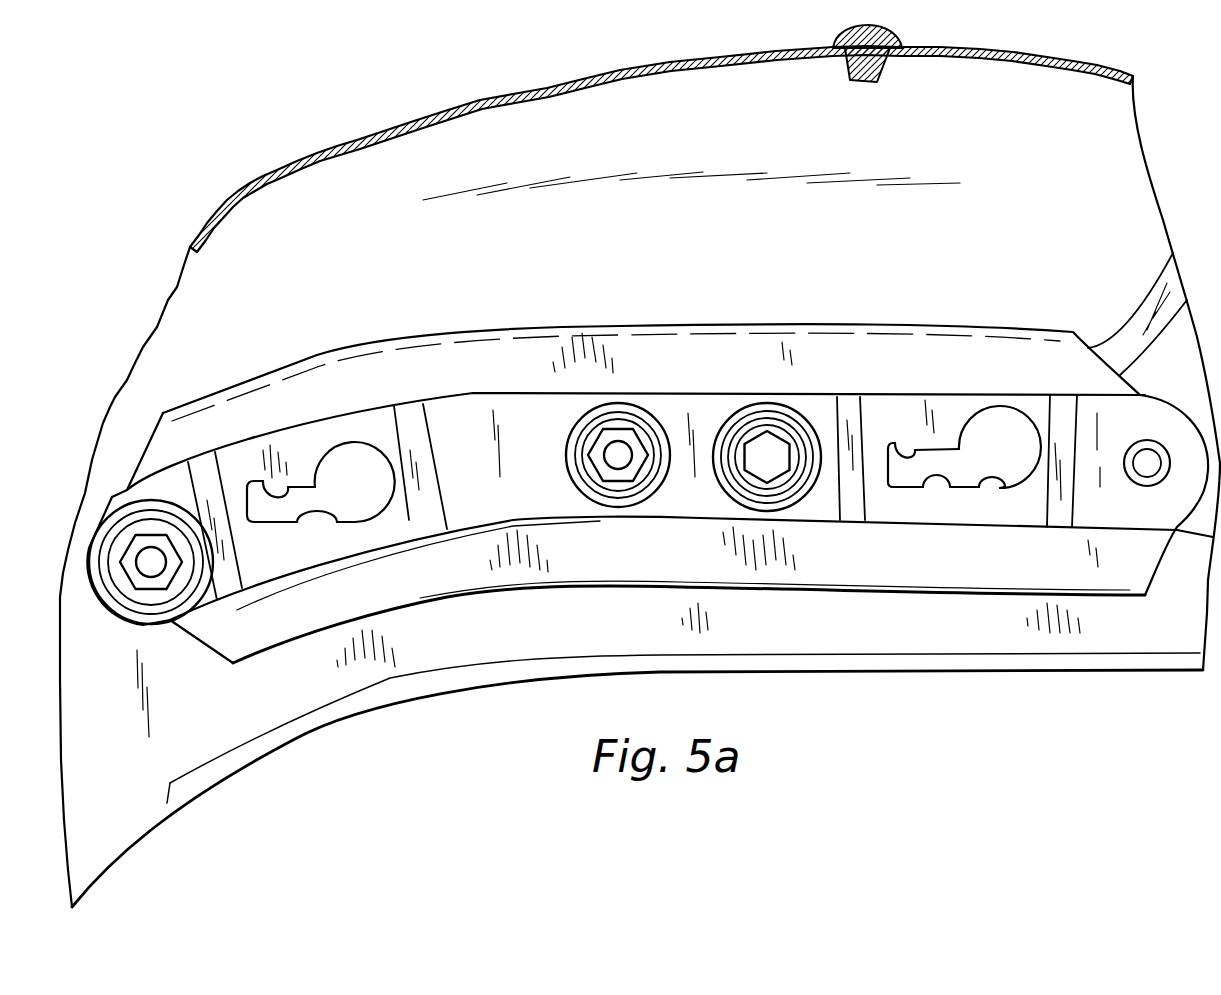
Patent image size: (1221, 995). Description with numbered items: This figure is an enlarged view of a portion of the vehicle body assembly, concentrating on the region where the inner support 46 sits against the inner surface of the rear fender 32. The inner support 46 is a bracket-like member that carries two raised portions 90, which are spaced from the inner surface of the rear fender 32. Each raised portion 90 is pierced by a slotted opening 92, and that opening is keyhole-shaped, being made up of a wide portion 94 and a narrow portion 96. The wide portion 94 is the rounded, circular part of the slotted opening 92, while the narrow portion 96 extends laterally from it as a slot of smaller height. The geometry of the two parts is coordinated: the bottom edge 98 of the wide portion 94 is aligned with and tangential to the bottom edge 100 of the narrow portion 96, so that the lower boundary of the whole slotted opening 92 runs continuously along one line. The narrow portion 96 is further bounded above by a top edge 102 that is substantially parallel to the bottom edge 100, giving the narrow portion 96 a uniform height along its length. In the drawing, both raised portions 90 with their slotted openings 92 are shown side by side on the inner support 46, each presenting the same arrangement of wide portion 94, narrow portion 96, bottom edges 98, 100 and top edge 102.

The rear fender 32 is at (455, 137).
The inner support 46 is at (673, 352).
The raised portion 90 is at (383, 430).
The slotted opening 92 is at (310, 487).
The wide portion 94 is at (358, 452).
The narrow portion 96 is at (258, 524).
The bottom edge of the wide portion 98 is at (360, 517).
The bottom edge of the narrow portion 100 is at (310, 515).
The top edge of the narrow portion 102 is at (283, 497).